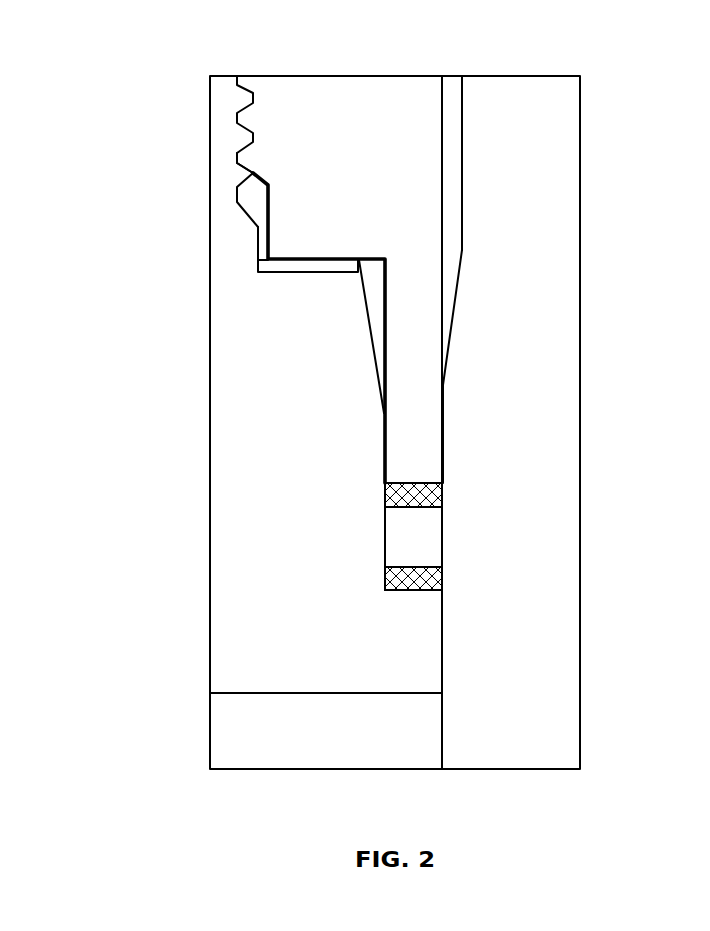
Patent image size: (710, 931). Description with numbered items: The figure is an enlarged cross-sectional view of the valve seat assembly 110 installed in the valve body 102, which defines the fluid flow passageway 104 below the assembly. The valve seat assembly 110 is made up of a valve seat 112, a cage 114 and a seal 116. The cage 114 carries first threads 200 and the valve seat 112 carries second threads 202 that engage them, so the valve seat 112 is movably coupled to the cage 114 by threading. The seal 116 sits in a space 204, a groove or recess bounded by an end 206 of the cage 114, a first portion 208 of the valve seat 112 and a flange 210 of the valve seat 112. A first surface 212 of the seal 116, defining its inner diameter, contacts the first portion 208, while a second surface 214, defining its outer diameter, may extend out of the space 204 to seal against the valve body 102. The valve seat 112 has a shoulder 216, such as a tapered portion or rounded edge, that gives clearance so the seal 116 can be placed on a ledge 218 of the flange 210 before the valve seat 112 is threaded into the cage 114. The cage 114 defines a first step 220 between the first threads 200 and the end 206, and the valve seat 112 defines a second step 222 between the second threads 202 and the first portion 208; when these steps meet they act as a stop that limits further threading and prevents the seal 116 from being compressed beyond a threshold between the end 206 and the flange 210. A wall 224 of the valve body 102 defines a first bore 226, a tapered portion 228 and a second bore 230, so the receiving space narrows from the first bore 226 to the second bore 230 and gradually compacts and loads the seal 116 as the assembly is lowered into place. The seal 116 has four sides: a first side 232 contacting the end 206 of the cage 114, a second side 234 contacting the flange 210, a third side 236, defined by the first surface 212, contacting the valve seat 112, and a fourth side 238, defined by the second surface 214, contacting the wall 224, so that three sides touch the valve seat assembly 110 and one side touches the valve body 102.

The valve seat assembly 110 is at (213, 44).
The valve body 102 is at (545, 207).
The fluid flow passageway 104 is at (348, 743).
The valve seat 112 is at (315, 678).
The cage 114 is at (343, 93).
The seal 116 is at (413, 525).
The first threads 200 is at (246, 125).
The second threads 202 is at (244, 186).
The space 204 is at (441, 495).
The end 206 is at (428, 482).
The first portion 208 is at (385, 489).
The flange 210 is at (418, 617).
The first surface 212 is at (385, 557).
The second surface 214 is at (441, 507).
The shoulder 216 is at (367, 312).
The ledge 218 is at (428, 591).
The first step 220 is at (300, 258).
The second step 222 is at (273, 273).
The wall 224 is at (463, 122).
The first bore 226 is at (463, 160).
The tapered portion 228 is at (463, 258).
The second bore 230 is at (443, 403).
The first side 232 is at (393, 482).
The second side 234 is at (393, 591).
The third side 236 is at (385, 578).
The fourth side 238 is at (443, 537).